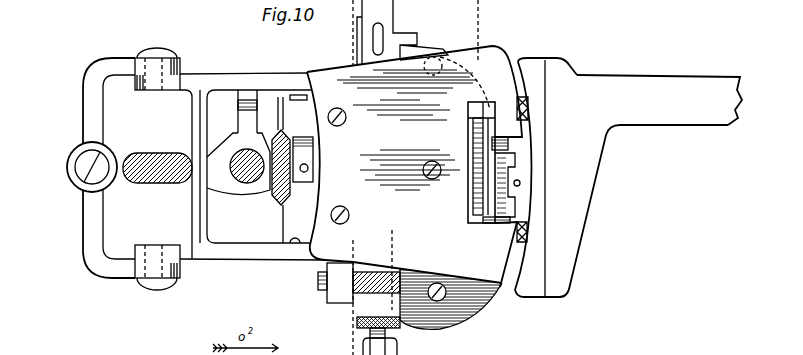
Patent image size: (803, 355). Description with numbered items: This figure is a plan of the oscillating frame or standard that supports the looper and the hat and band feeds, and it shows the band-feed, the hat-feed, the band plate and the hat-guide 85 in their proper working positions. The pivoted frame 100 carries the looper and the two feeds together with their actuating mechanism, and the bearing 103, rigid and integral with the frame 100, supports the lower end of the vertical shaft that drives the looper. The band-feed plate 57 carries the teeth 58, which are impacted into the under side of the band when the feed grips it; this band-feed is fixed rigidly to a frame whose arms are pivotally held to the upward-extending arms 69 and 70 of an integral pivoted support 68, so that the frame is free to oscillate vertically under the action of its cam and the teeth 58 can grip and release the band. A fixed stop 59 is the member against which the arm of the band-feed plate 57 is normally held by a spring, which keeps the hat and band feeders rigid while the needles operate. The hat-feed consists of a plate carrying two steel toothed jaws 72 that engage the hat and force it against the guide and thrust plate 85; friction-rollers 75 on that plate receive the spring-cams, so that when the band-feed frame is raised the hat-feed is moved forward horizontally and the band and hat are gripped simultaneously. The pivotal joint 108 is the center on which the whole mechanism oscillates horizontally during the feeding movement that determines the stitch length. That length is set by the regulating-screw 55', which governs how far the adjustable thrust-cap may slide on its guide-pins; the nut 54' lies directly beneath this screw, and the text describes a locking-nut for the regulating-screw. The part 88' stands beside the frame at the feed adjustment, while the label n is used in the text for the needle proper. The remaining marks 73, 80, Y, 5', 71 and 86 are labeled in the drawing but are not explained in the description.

The pivoted support 68 is at (100, 113).
The upward-extending arm 70 is at (175, 58).
The upward-extending arm 69 is at (181, 279).
The pivotal joint 108 is at (72, 185).
The pivoted frame 100 is at (143, 184).
The post block 73 is at (243, 97).
The bearing 103 is at (235, 193).
The bracket with toothed member 80 is at (279, 98).
The fixed stop 59 is at (488, 62).
The band-feed plate 57 is at (497, 303).
The screw Y is at (443, 298).
The adjusting screw 88' is at (345, 292).
The regulating-screw 55' is at (360, 324).
The lower nut 54' is at (397, 341).
The part 5' is at (476, 349).
The friction-roller 75 is at (513, 352).
The teeth 58 is at (513, 157).
The rack piece 71 is at (512, 218).
The needle n is at (521, 183).
The toothed jaws 72 is at (528, 100).
The hat-guide 85 is at (533, 265).
The arm extension 86 is at (659, 100).